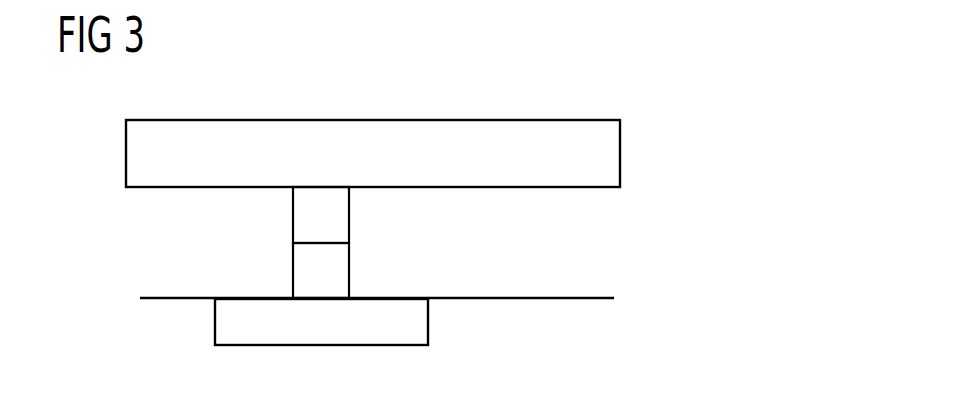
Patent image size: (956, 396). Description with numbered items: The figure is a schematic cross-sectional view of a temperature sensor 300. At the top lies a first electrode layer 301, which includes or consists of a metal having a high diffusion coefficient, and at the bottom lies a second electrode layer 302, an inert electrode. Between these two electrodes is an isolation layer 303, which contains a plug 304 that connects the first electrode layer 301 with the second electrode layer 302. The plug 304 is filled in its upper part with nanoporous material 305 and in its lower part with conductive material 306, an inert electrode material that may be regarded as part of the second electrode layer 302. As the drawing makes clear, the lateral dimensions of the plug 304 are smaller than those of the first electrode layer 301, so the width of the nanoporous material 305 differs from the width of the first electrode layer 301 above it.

The temperature sensor 300 is at (547, 82).
The first electrode layer 301 is at (620, 151).
The second electrode layer 302 is at (421, 325).
The isolation layer 303 is at (217, 228).
The plug 304 is at (438, 242).
The nanoporous material 305 is at (338, 202).
The conductive material 306 is at (338, 260).